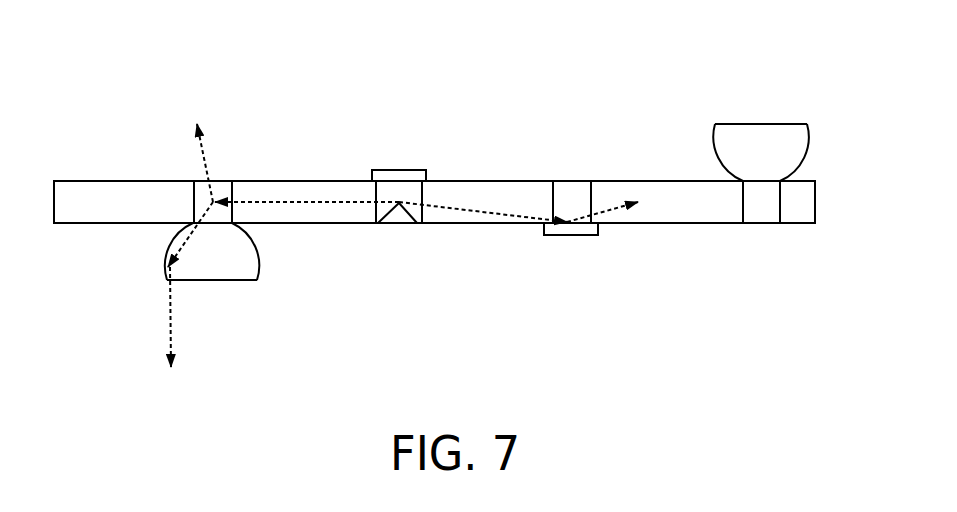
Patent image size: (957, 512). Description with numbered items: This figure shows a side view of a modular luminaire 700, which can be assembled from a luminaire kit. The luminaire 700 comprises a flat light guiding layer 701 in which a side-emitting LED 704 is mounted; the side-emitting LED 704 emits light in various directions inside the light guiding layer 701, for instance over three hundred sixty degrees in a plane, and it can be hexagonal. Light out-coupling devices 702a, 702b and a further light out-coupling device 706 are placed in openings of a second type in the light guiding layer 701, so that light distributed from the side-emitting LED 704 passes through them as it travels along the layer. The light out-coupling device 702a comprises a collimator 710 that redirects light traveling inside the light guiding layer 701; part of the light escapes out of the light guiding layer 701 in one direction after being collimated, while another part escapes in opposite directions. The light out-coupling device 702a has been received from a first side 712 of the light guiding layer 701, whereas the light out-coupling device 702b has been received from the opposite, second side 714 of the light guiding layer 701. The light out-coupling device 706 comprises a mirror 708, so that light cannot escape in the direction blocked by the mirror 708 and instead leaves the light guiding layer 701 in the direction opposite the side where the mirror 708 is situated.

The luminaire 700 is at (145, 111).
The light guiding layer 701 is at (690, 224).
The light out-coupling device 702a is at (221, 181).
The light out-coupling device 702b is at (782, 212).
The side-emitting LED 704 is at (422, 205).
The light out-coupling device 706 is at (593, 200).
The mirror 708 is at (573, 235).
The collimator 710 is at (237, 281).
The first side 712 is at (114, 229).
The second side 714 is at (490, 178).